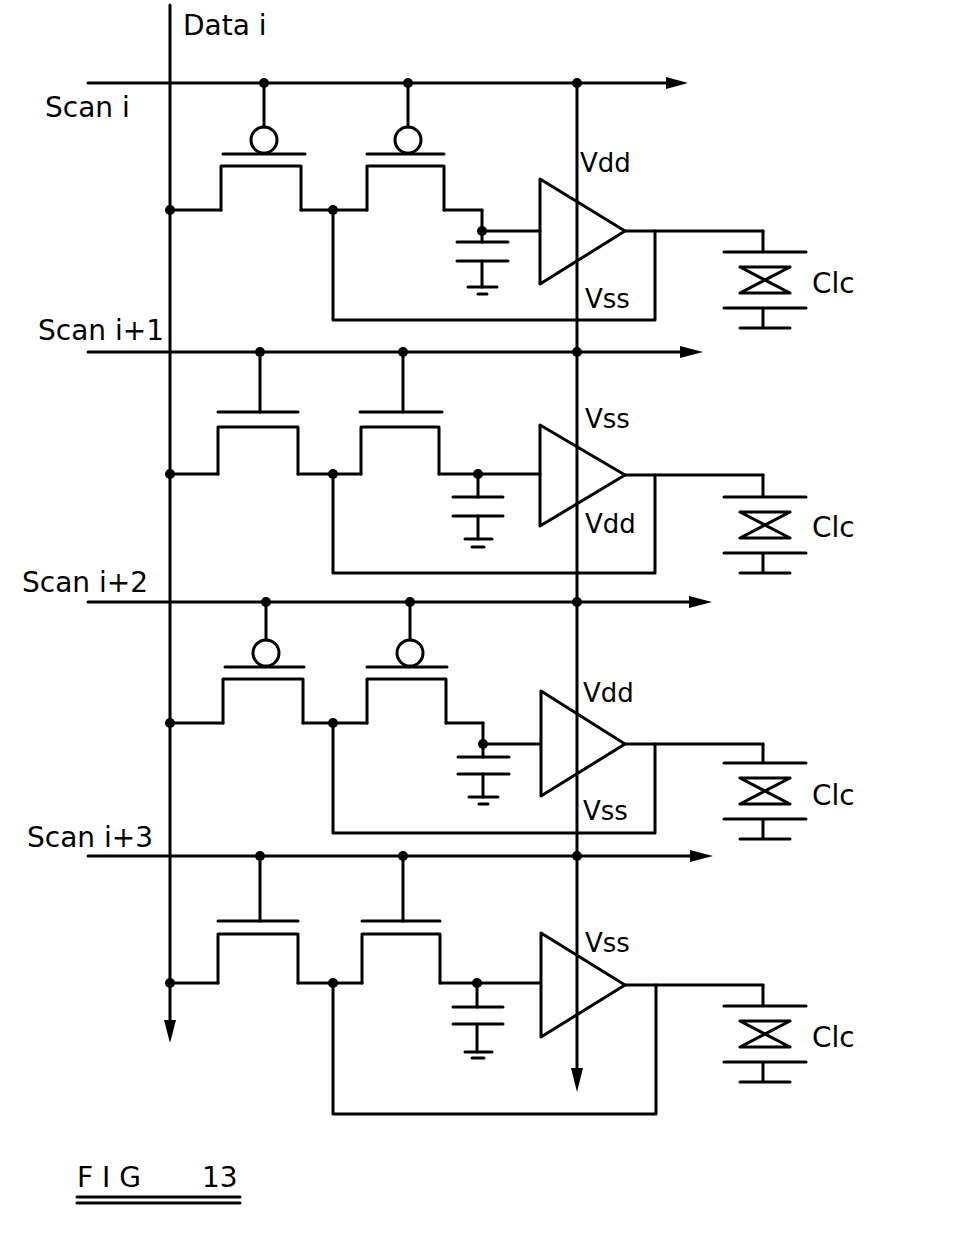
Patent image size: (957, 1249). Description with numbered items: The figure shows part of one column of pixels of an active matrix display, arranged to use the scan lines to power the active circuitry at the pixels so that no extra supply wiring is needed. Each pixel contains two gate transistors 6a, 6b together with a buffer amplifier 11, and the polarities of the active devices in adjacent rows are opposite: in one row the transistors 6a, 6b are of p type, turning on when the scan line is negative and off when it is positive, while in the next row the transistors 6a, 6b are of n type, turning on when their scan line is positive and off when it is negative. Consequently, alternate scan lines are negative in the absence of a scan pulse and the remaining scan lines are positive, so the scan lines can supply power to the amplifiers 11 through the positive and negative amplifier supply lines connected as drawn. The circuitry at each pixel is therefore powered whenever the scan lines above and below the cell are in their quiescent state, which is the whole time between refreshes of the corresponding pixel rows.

The transistor 6a is at (246, 505).
The transistor 6b is at (385, 525).
The buffer amplifier 11 is at (612, 221).